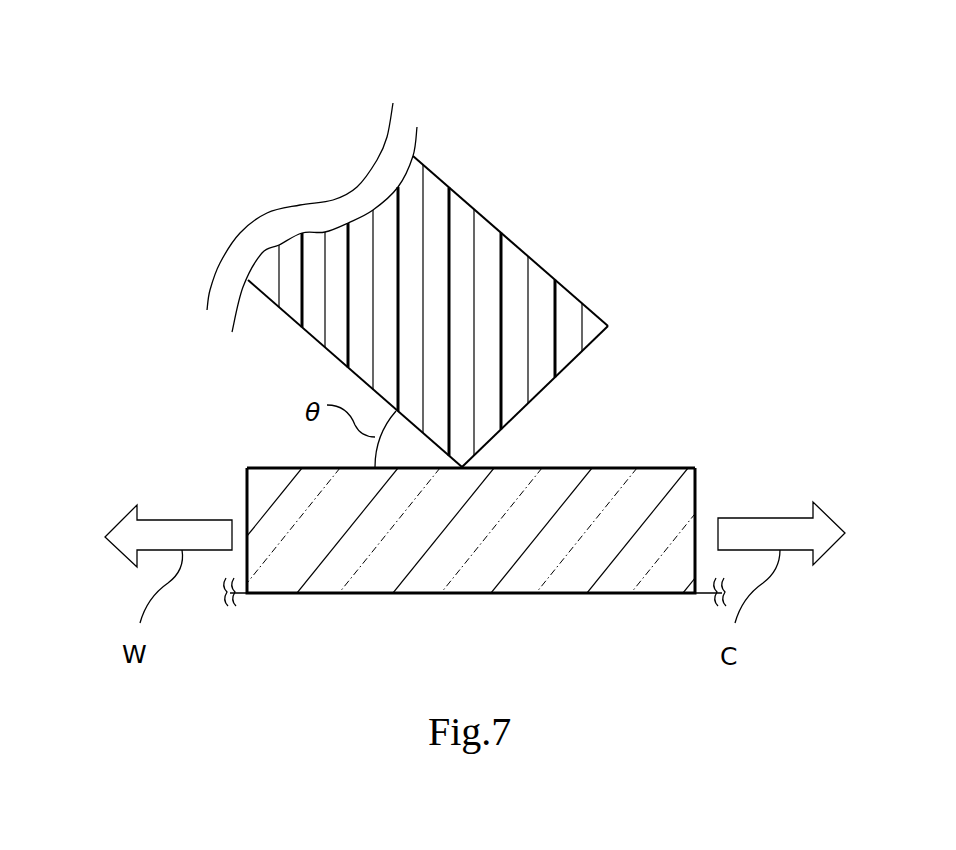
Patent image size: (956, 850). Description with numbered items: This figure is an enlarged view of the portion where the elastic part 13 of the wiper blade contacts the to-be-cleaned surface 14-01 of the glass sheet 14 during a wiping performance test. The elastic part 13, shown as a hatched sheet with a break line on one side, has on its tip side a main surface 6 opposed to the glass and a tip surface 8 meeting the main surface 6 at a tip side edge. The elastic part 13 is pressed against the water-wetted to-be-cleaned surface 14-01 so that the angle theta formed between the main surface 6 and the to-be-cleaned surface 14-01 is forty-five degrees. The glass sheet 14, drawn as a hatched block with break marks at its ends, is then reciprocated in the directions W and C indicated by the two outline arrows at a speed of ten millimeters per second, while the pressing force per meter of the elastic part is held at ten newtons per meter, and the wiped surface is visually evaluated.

The elastic part 13 is at (548, 249).
The main surface 6 is at (311, 338).
The tip surface 8 is at (588, 360).
The glass sheet 14 is at (695, 502).
The to-be-cleaned surface 14-01 is at (655, 467).